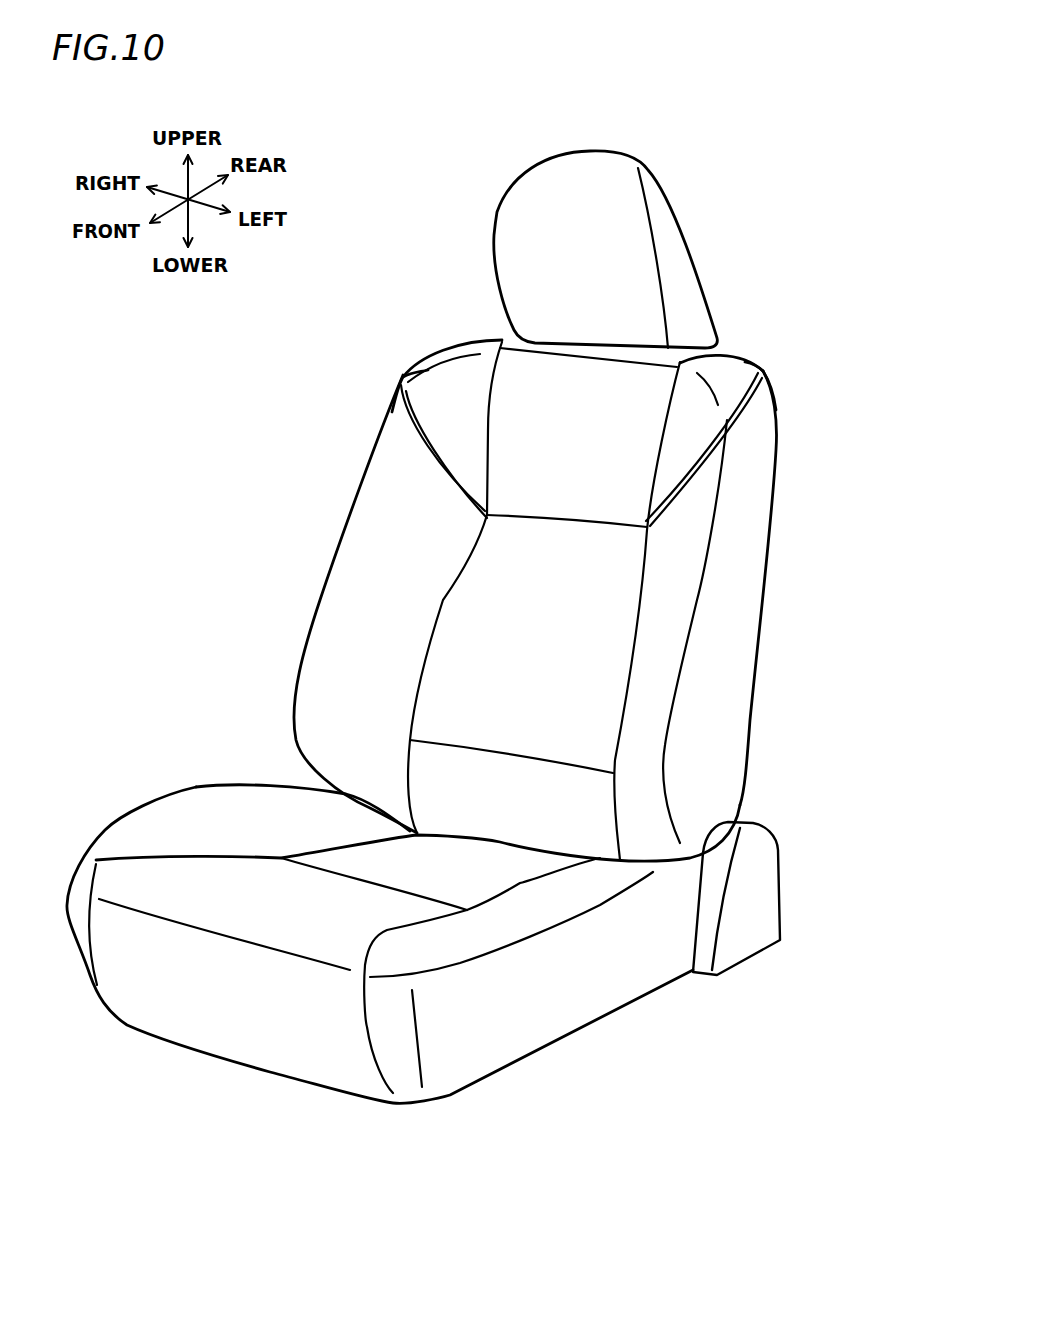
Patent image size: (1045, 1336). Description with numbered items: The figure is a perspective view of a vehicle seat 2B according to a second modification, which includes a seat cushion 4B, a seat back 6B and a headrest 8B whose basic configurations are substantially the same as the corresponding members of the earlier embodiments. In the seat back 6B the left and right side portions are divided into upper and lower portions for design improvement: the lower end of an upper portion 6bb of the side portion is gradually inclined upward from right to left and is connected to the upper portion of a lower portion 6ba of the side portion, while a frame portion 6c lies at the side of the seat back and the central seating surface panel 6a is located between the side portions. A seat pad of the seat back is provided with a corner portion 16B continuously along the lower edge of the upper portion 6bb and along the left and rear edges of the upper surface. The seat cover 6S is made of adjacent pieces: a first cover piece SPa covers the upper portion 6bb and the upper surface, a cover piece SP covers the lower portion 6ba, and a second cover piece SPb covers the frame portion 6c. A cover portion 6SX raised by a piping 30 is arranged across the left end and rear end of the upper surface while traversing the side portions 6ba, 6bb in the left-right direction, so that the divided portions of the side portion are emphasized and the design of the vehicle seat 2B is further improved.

The vehicle seat 2B is at (493, 605).
The seat cushion 4B is at (199, 778).
The seat back 6B is at (508, 600).
The headrest 8B is at (487, 259).
The center panel of seat back 6a is at (543, 659).
The lower portion of the side portion 6ba is at (398, 629).
The upper portion of the side portion 6bb is at (473, 436).
The frame portion 6c is at (727, 709).
The cover portion raised by the piping 6SX is at (402, 378).
The piping 30 is at (577, 376).
The cover piece SP is at (794, 513).
The first cover piece SPa is at (727, 383).
The second cover piece SPb is at (735, 572).
The seat cover 6S is at (794, 513).
The corner portion 16B is at (685, 478).